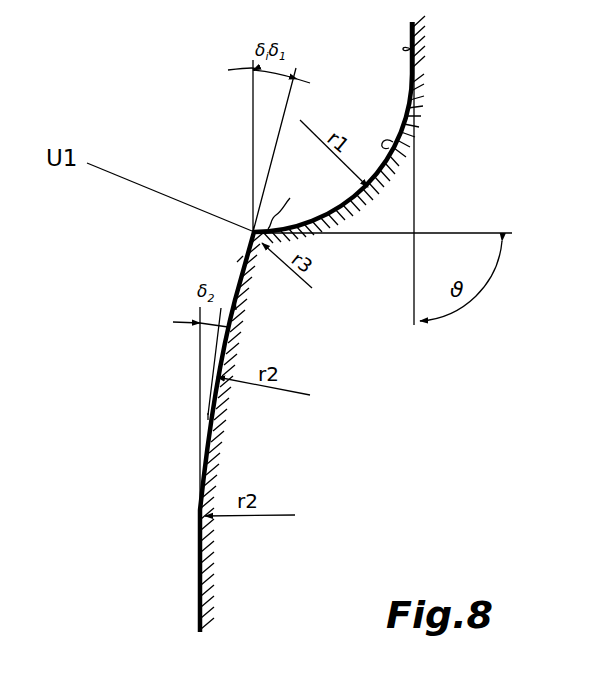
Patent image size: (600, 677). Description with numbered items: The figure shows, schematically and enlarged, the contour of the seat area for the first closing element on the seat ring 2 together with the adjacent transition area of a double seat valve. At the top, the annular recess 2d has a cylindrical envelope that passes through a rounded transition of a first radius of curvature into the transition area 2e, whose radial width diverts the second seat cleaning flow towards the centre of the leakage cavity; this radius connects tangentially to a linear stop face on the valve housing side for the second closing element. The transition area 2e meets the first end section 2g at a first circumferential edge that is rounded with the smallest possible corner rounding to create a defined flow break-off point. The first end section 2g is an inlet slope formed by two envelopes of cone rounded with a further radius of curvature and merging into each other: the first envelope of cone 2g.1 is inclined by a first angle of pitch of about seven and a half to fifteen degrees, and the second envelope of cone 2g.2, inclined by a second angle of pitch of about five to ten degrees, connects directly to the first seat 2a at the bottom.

The seat ring 2 is at (312, 324).
The first seat 2a is at (200, 591).
The annular recess 2d is at (412, 58).
The transition area 2e is at (390, 142).
The first end section 2g is at (193, 357).
The first envelope of cone 2g.1 is at (243, 256).
The second envelope of cone 2g.2 is at (208, 413).